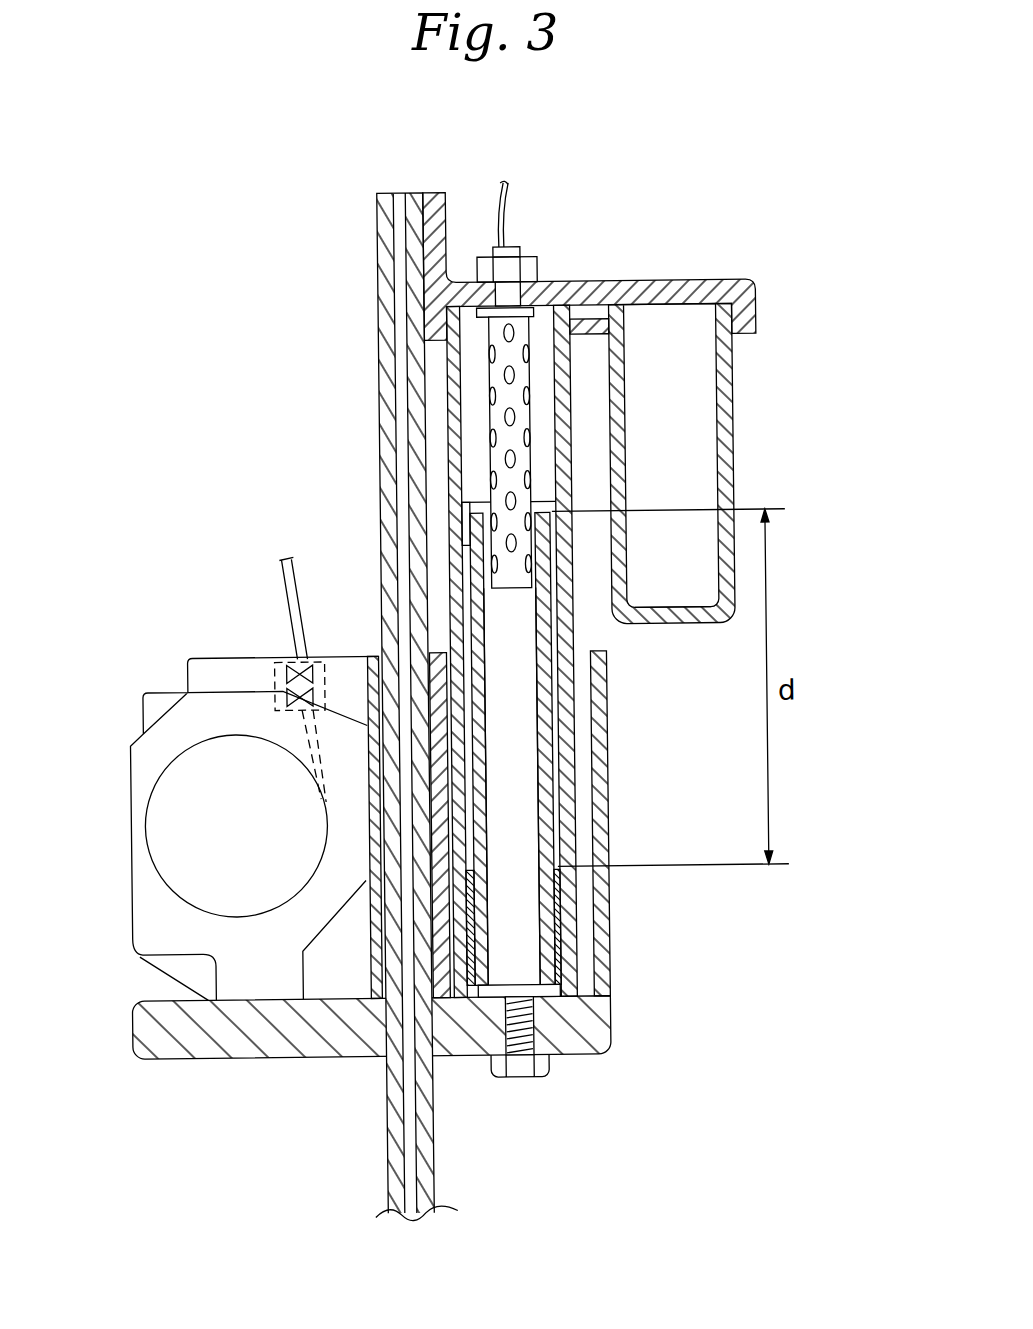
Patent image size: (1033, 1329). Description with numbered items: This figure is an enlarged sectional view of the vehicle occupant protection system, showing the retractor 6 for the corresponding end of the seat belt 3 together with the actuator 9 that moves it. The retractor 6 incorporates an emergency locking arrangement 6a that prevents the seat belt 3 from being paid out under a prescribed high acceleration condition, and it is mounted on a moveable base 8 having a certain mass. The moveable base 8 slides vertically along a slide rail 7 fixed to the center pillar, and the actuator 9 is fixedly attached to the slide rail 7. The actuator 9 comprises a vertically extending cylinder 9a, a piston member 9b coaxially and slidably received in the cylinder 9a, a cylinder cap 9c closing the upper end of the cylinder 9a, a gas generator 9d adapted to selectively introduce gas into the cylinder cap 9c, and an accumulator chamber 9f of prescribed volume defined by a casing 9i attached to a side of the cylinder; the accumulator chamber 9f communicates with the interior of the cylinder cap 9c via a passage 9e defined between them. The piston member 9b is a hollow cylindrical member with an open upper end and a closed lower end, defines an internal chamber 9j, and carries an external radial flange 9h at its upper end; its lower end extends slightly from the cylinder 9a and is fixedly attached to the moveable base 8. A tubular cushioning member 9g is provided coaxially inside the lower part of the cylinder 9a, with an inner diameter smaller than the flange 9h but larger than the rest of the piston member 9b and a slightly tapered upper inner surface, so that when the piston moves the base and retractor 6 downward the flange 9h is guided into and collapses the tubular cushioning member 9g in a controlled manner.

The seat belt 3 is at (294, 628).
The retractor 6 is at (138, 788).
The emergency locking arrangement 6a is at (278, 676).
The slide rail 7 is at (383, 407).
The moveable base 8 is at (281, 1047).
The actuator 9 is at (610, 628).
The cylinder 9a is at (568, 830).
The piston member 9b is at (547, 731).
The cylinder cap 9c is at (717, 284).
The gas generator 9d is at (519, 590).
The passage 9e is at (583, 310).
The accumulator chamber 9f is at (673, 639).
The tubular cushioning member 9g is at (559, 948).
The external radial flange 9h is at (551, 502).
The casing 9i is at (733, 428).
The internal chamber 9j is at (548, 743).